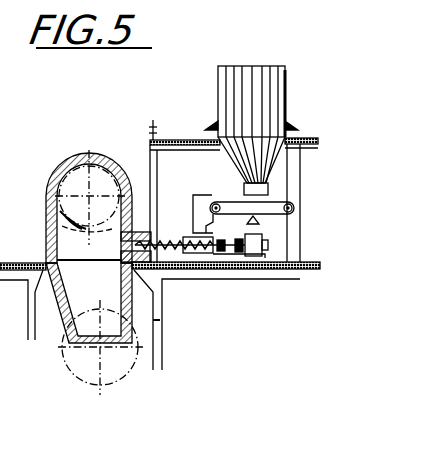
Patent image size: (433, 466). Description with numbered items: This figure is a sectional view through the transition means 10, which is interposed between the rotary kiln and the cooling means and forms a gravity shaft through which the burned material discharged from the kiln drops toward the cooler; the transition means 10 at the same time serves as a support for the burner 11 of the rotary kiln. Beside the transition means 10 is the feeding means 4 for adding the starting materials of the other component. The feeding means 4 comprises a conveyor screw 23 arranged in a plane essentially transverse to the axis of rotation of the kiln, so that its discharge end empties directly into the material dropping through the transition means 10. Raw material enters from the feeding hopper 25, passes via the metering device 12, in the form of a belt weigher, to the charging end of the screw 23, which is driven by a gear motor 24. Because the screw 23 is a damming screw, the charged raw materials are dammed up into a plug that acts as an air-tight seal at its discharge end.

The feeding means 4 is at (286, 110).
The transition means 10 is at (59, 163).
The burner 11 is at (60, 214).
The metering device 12 is at (284, 199).
The conveyor screw 23 is at (179, 269).
The gear motor 24 is at (250, 262).
The feeding hopper 25 is at (193, 205).